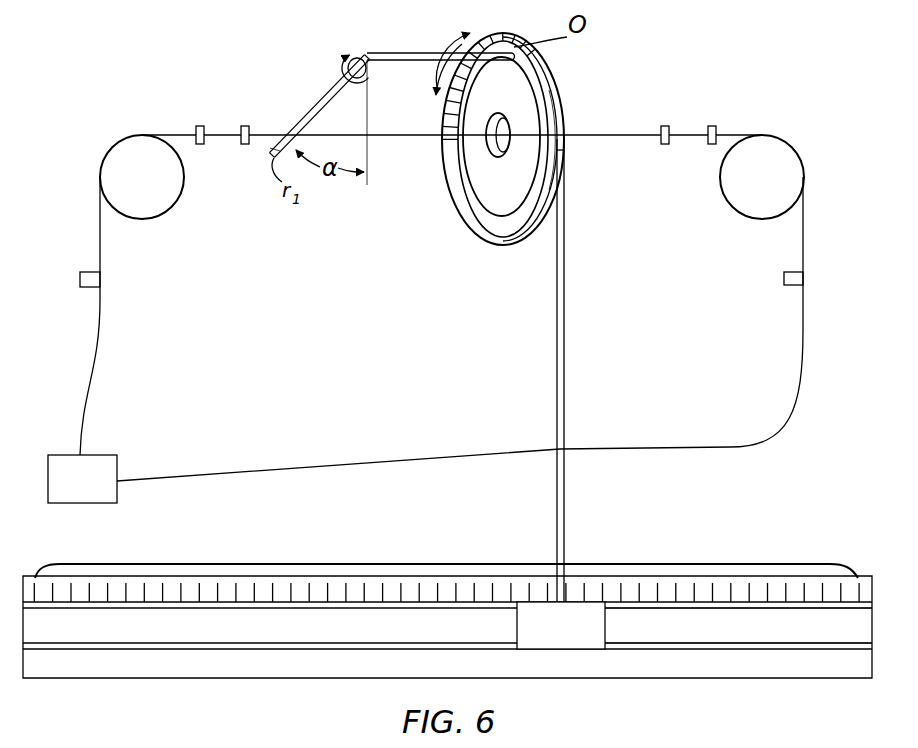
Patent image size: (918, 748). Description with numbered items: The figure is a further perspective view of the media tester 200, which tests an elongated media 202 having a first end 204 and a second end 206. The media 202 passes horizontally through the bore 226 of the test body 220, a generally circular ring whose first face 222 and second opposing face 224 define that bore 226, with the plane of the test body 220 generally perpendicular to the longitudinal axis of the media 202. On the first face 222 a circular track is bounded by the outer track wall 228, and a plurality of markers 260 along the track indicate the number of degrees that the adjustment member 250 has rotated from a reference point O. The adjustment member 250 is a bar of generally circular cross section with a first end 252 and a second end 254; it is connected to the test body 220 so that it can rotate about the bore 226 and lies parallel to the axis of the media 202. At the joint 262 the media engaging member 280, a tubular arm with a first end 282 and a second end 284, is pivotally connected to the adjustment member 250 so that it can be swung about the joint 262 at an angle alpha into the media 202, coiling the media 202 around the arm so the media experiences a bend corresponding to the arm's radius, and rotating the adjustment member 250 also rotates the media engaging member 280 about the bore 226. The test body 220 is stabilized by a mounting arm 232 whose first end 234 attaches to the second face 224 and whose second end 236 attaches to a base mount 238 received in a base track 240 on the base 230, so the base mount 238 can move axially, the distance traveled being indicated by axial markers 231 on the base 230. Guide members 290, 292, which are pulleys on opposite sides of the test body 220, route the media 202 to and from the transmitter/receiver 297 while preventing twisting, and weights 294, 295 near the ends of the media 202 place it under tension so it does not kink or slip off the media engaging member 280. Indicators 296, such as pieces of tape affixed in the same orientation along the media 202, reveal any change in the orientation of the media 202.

The media tester 200 is at (569, 52).
The media 202 is at (178, 133).
The first end 204 is at (100, 322).
The second end 206 is at (808, 243).
The test body 220 is at (570, 107).
The first face 222 is at (472, 221).
The second face 224 is at (565, 143).
The bore 226 is at (492, 139).
The outer track wall 228 is at (465, 176).
The base 230 is at (738, 575).
The axial markers 231 is at (457, 565).
The mounting arm 232 is at (583, 384).
The first end 234 is at (565, 162).
The second end 236 is at (567, 598).
The base mount 238 is at (610, 628).
The base track 240 is at (770, 633).
The adjustment member 250 is at (413, 67).
The first end 252 is at (393, 53).
The second end 254 is at (493, 34).
The markers 260 is at (545, 71).
The joint 262 is at (358, 58).
The media engaging member 280 is at (296, 111).
The first end 282 is at (277, 147).
The second end 284 is at (340, 50).
The guide member 290 is at (110, 148).
The guide member 292 is at (797, 148).
The weight 294 is at (80, 280).
The weight 295 is at (784, 280).
The indicators 296 is at (200, 145).
The transmitter/receiver 297 is at (118, 473).